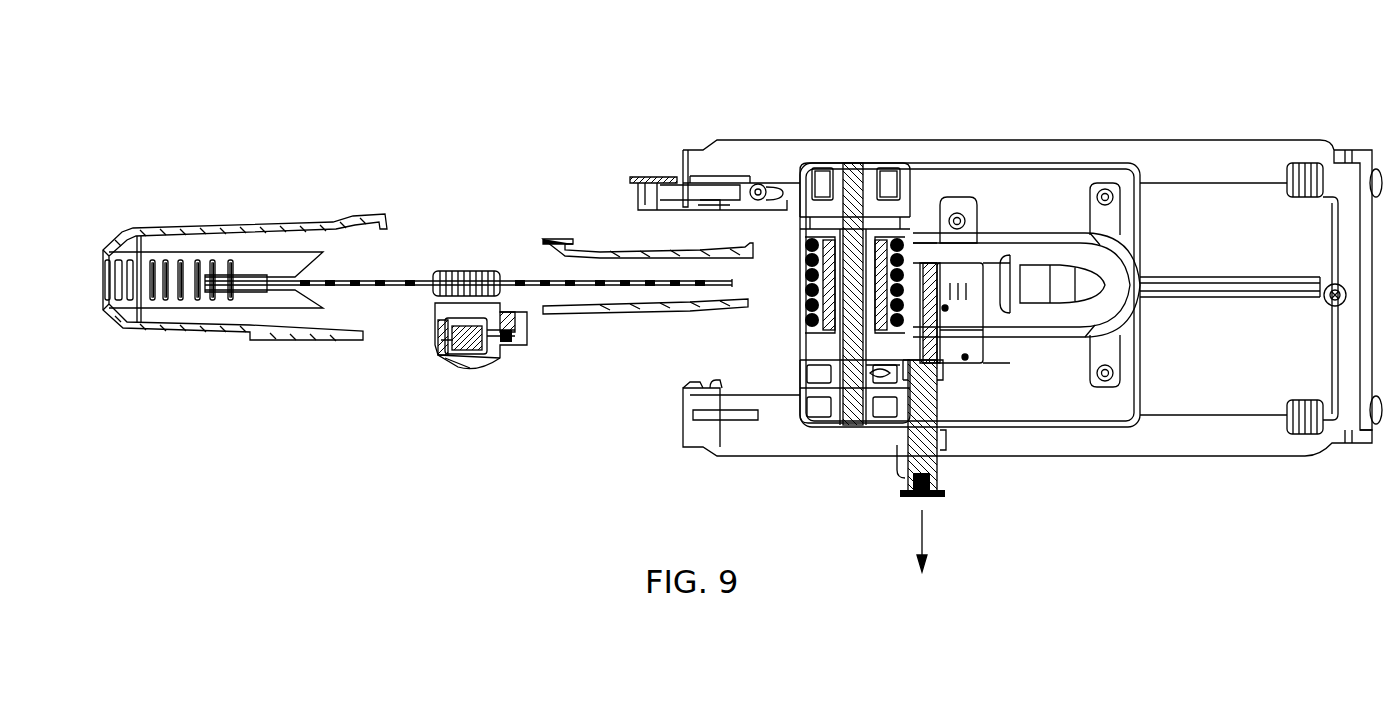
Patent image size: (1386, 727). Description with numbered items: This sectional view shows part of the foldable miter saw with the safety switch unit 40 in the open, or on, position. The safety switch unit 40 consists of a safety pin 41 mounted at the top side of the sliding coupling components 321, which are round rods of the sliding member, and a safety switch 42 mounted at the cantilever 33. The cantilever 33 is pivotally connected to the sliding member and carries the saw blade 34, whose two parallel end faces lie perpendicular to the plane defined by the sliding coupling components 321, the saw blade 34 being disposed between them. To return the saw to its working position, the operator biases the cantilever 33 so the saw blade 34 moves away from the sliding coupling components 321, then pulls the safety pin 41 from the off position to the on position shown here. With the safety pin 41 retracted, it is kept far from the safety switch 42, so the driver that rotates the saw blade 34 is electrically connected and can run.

The sliding coupling components 321 is at (862, 150).
The cantilever 33 is at (731, 150).
The saw blade 34 is at (400, 280).
The safety switch unit 40 is at (888, 468).
The safety pin 41 is at (930, 456).
The safety switch 42 is at (964, 322).